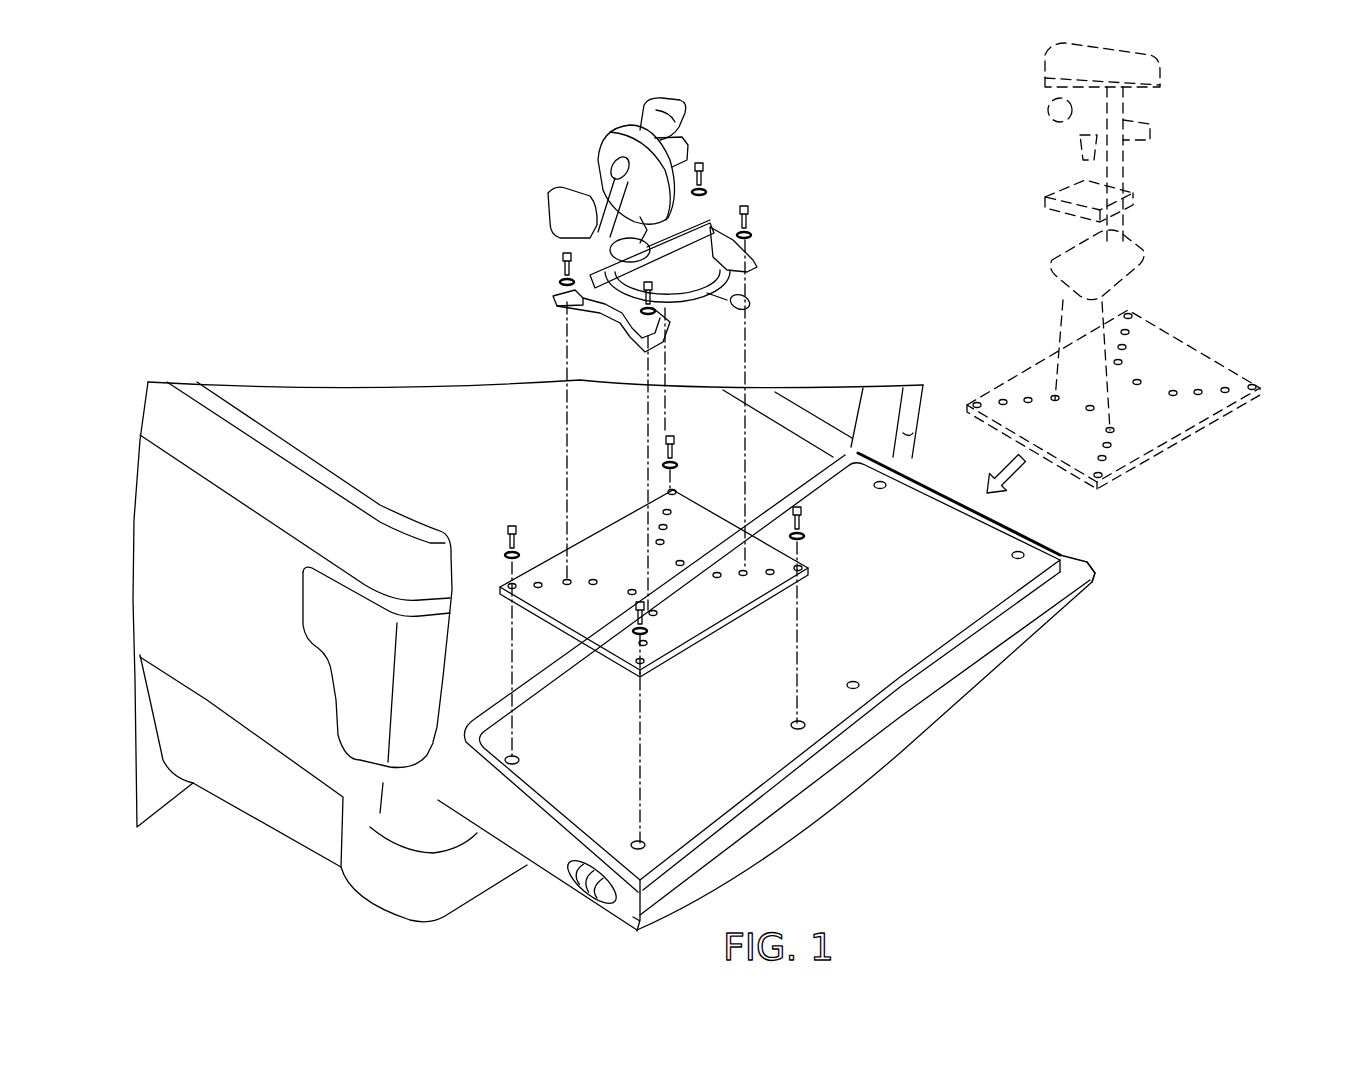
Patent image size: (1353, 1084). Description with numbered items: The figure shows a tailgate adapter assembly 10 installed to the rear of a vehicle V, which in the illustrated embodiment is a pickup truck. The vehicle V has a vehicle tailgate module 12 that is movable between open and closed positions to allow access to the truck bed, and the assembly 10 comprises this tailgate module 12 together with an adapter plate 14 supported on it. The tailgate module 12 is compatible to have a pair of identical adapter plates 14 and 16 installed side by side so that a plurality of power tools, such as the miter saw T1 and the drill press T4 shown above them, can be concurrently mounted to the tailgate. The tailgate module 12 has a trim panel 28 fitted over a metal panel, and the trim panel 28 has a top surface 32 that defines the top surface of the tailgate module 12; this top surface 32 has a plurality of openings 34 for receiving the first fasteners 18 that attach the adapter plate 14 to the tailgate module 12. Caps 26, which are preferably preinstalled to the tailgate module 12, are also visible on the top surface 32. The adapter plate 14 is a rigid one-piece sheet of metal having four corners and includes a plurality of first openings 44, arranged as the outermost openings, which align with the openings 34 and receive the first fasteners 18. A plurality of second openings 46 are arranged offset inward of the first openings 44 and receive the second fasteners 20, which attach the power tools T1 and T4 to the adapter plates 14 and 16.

The tailgate adapter assembly 10 is at (860, 383).
The vehicle tailgate module 12 is at (779, 638).
The adapter plate 14 is at (654, 587).
The adapter plate 16 is at (1197, 343).
The first fasteners 18 is at (510, 525).
The second fasteners 20 is at (560, 253).
The caps 26 is at (880, 490).
The trim panel 28 is at (1023, 587).
The top surface 32 is at (779, 746).
The openings 34 is at (518, 760).
The first openings 44 is at (510, 585).
The second openings 46 is at (617, 553).
The vehicle V is at (338, 352).
The miter saw T1 is at (540, 152).
The drill press T4 is at (1190, 92).